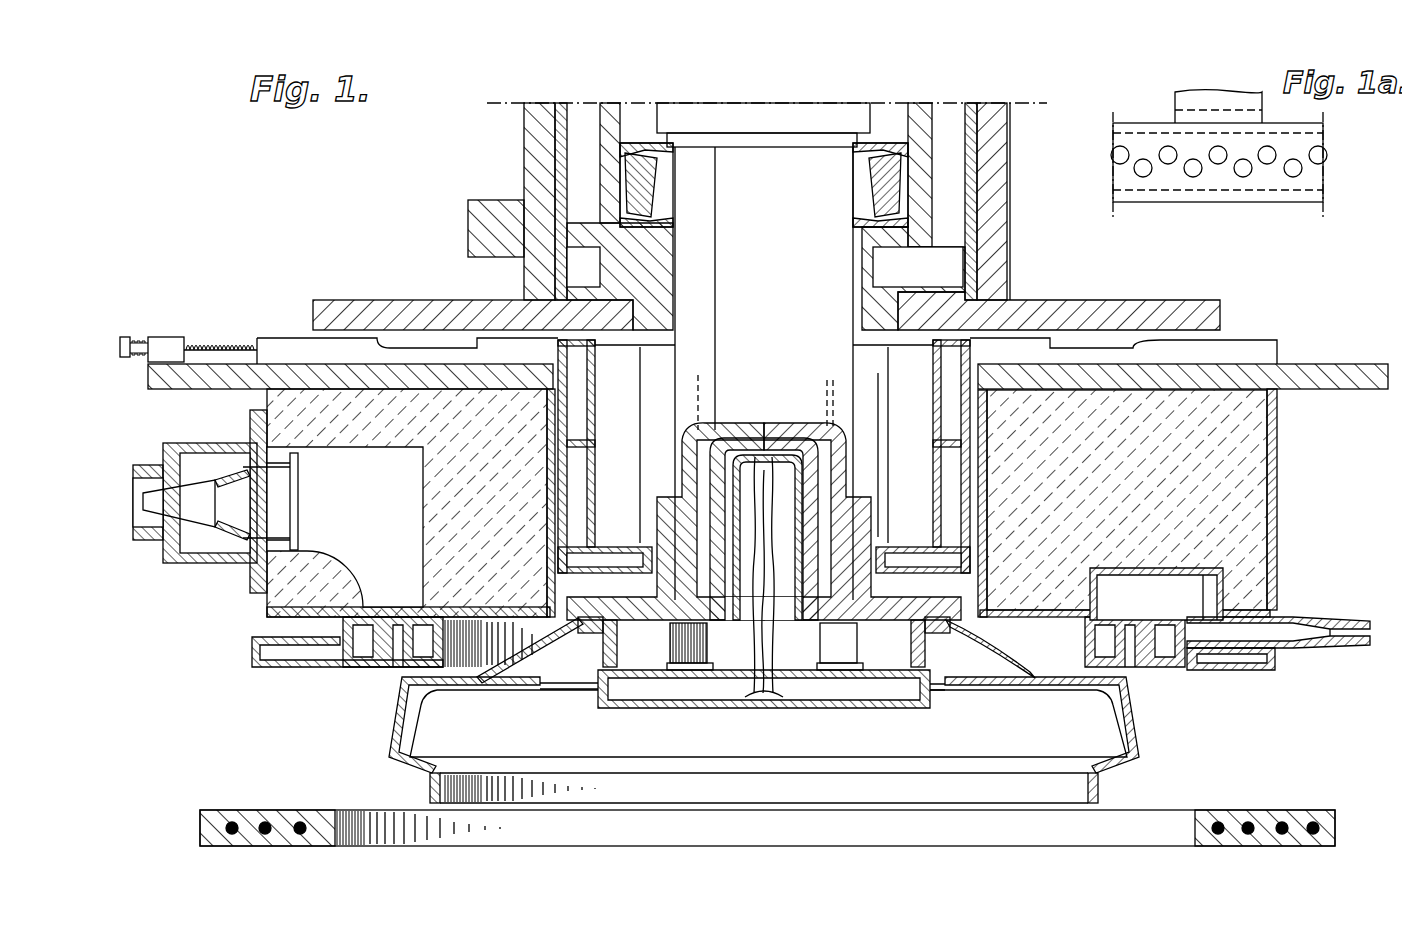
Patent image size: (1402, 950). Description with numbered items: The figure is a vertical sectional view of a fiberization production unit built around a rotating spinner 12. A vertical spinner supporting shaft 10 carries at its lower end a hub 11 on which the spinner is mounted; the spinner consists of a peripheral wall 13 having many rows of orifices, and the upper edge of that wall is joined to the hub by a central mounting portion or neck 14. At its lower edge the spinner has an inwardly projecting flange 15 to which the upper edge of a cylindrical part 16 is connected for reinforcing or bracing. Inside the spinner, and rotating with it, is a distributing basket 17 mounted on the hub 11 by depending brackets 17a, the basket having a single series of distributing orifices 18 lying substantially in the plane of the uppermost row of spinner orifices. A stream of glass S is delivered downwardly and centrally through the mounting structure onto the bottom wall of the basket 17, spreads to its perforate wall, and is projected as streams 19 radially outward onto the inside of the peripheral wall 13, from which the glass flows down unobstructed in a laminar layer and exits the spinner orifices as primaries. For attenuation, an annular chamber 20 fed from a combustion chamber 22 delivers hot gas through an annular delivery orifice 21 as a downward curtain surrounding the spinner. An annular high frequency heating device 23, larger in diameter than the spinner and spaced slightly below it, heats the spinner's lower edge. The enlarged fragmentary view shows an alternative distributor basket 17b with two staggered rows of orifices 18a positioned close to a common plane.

In FIG. 1, the spinner supporting shaft 10 is at (840, 392).
In FIG. 1, the hub 11 is at (857, 522).
In FIG. 1, the stream of glass S is at (767, 480).
In FIG. 1, the spinner 12 is at (1147, 750).
In FIG. 1, the peripheral wall 13 is at (1137, 722).
In FIG. 1, the central mounting portion or neck 14 is at (1005, 660).
In FIG. 1, the inwardly projecting flange 15 is at (1117, 770).
In FIG. 1, the cylindrical part 16 is at (1087, 780).
In FIG. 1, the distributing basket 17 is at (867, 710).
In FIG. 1, the depending brackets 17a is at (572, 640).
In FIG. 1a, the depending brackets 17a is at (1175, 103).
In FIG. 1a, the alternative distributor basket 17b is at (1238, 196).
In FIG. 1, the distributing orifices 18 is at (600, 690).
In FIG. 1a, the orifices 18a is at (1168, 157).
In FIG. 1, the streams 19 is at (983, 688).
In FIG. 1, the annular chamber 20 is at (393, 625).
In FIG. 1, the annular delivery orifice 21 is at (385, 667).
In FIG. 1, the combustion chamber 22 is at (368, 514).
In FIG. 1, the high frequency heating device 23 is at (1257, 812).